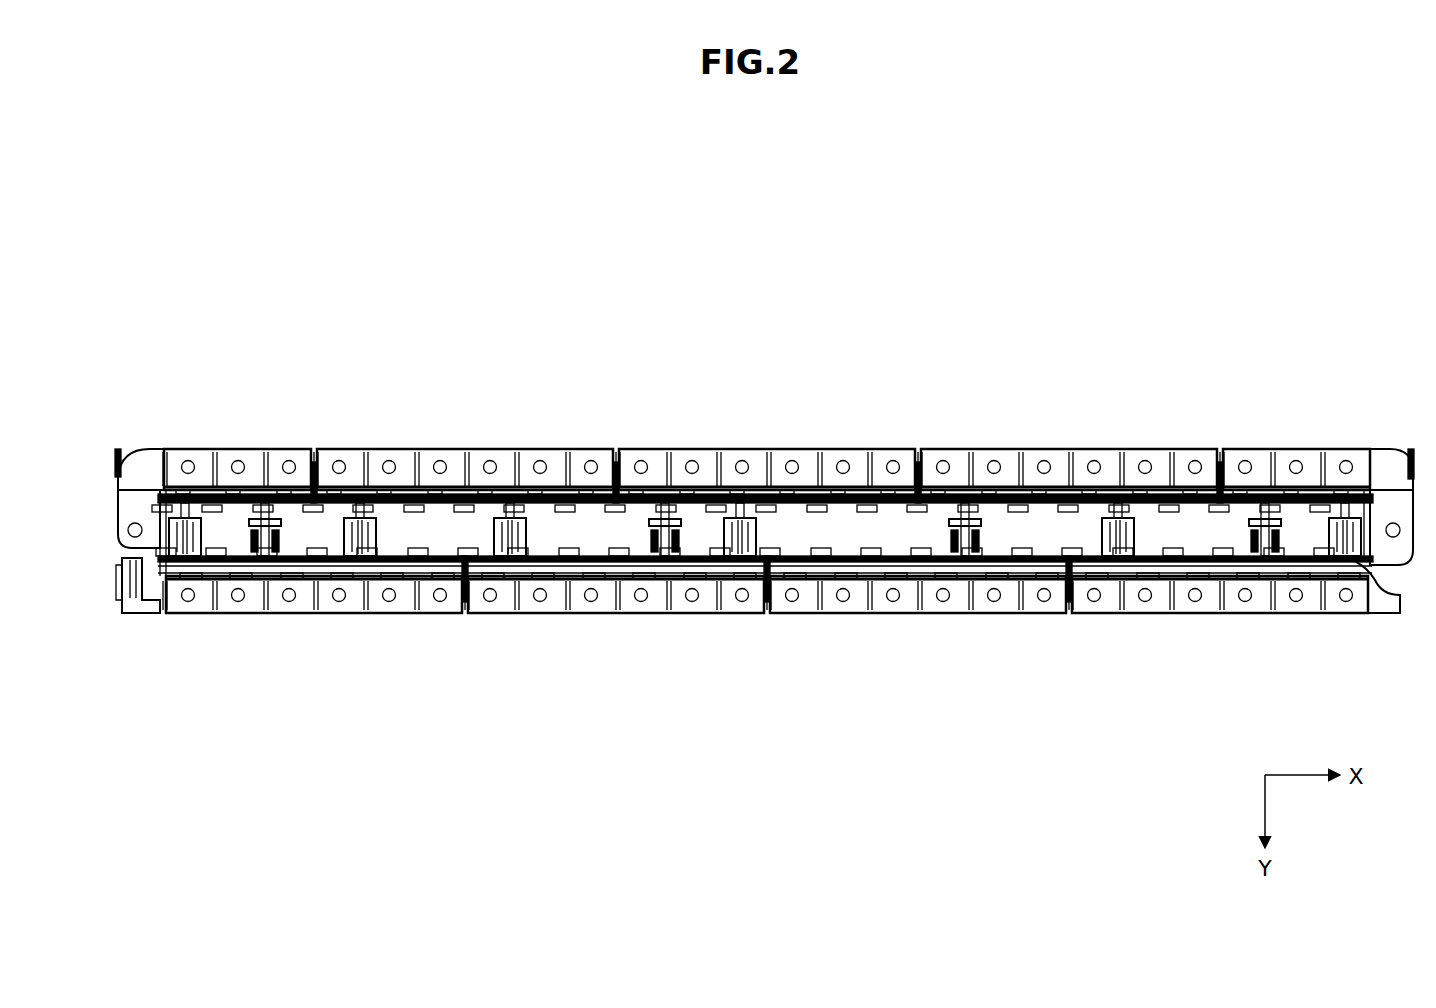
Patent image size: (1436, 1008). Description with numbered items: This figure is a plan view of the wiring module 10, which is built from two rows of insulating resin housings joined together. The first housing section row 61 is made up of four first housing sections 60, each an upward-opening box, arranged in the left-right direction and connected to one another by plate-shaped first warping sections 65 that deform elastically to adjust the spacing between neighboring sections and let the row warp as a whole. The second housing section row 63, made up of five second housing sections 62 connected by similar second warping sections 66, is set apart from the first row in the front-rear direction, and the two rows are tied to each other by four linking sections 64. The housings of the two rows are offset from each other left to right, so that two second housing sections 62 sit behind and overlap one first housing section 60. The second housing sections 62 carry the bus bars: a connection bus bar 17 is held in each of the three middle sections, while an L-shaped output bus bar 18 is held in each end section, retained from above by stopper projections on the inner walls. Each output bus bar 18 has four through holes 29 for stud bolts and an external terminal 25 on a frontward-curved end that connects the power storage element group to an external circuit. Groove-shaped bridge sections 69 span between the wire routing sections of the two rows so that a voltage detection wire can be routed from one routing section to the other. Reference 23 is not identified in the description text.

The wiring module 10 is at (400, 335).
The connection bus bar 17 is at (338, 452).
The output bus bar 18 is at (200, 450).
The lower bus bar plate 23 is at (986, 456).
The external terminal 25 is at (125, 520).
The through hole 29 is at (1346, 450).
The first housing section 60 is at (248, 613).
The first housing section row 61 is at (103, 580).
The second housing section 62 is at (171, 450).
The second housing section row 63 is at (103, 458).
The linking section 64 is at (270, 515).
The first warping section 65 is at (465, 602).
The second warping section 66 is at (314, 460).
The bridge section 69 is at (151, 590).